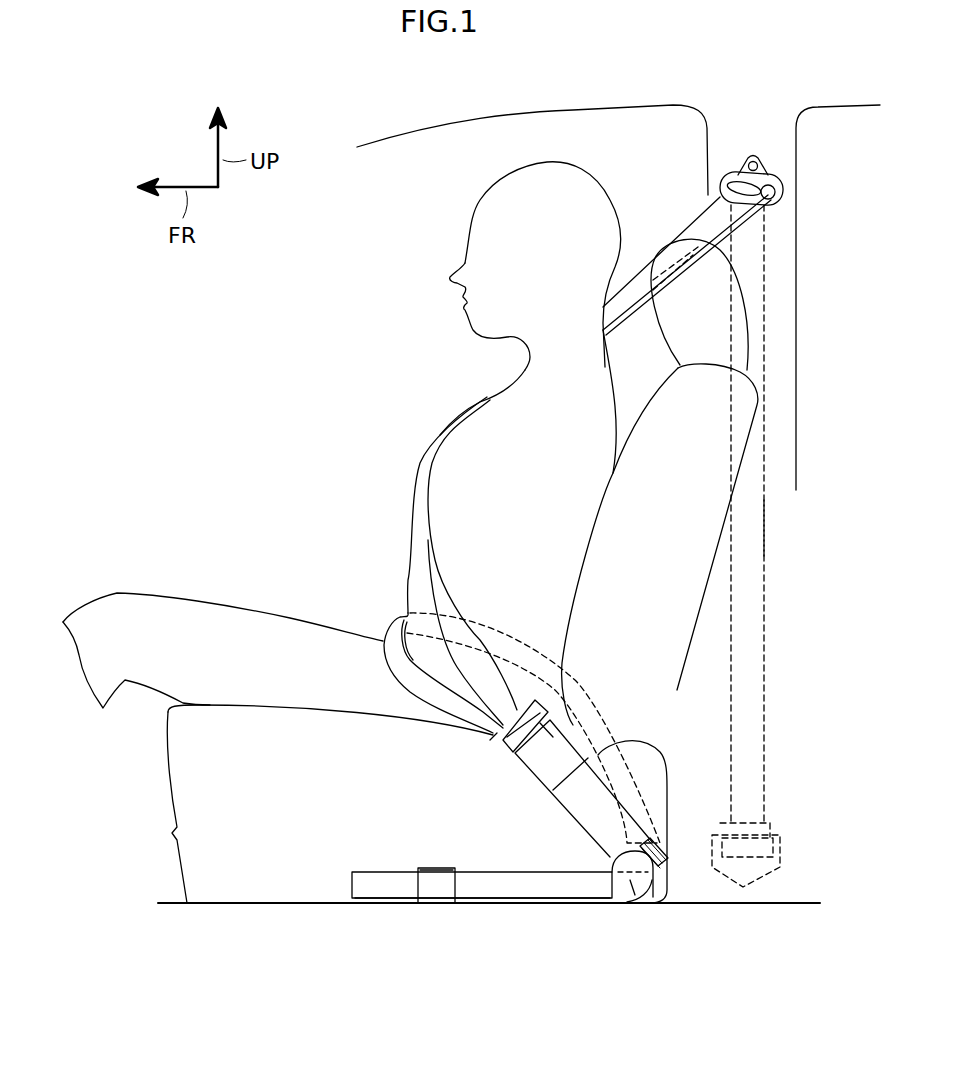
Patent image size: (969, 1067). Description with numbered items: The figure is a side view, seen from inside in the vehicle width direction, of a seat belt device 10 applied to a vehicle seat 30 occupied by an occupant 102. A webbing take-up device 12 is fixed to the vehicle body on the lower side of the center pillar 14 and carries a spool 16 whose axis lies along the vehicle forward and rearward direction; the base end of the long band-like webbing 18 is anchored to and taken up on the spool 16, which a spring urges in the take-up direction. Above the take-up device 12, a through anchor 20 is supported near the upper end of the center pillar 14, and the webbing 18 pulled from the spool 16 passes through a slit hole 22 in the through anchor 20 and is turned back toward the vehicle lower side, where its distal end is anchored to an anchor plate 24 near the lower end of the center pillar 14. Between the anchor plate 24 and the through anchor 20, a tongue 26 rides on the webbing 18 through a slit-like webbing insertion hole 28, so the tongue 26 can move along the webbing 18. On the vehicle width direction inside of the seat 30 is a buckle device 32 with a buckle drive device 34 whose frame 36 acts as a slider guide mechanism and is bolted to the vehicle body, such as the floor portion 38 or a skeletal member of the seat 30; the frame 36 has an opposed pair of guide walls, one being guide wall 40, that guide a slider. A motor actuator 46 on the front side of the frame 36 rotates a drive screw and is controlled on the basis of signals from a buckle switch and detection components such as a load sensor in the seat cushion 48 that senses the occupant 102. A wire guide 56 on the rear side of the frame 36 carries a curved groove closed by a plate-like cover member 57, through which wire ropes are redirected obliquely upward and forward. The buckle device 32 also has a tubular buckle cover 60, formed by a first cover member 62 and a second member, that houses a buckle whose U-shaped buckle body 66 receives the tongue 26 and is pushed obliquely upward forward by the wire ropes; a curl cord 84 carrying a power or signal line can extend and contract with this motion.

The seat belt device 10 is at (782, 644).
The webbing take-up device 12 is at (780, 843).
The center pillar 14 is at (797, 317).
The spool 16 is at (753, 867).
The webbing 18 is at (428, 447).
The through anchor 20 is at (772, 177).
The slit hole 22 is at (720, 175).
The anchor plate 24 is at (667, 813).
The tongue 26 is at (490, 742).
The webbing insertion hole 28 is at (520, 698).
The vehicle seat 30 is at (706, 603).
The buckle device 32 is at (506, 821).
The buckle drive device 34 is at (453, 858).
The frame 36 is at (515, 872).
The floor portion 38 is at (238, 902).
The guide wall 40 is at (490, 890).
The motor actuator 46 is at (417, 867).
The seat cushion 48 is at (315, 704).
The wire guide 56 is at (667, 887).
The cover member 57 is at (638, 880).
The buckle cover 60 is at (596, 768).
The first cover member 62 is at (585, 805).
The buckle body 66 is at (410, 540).
The curl cord 84 is at (665, 853).
The occupant 102 is at (472, 435).